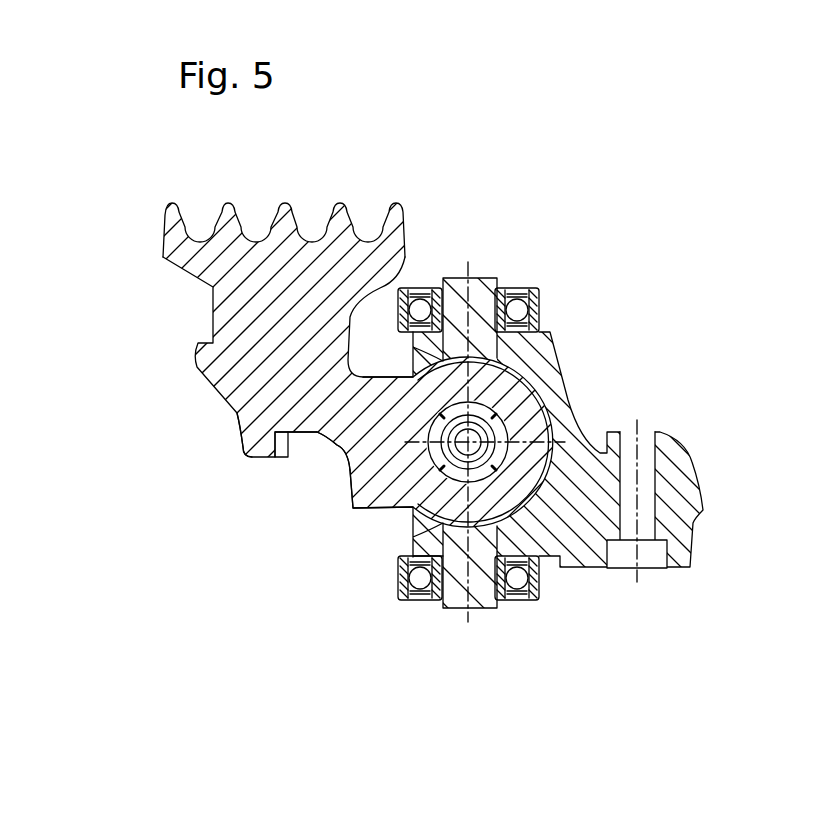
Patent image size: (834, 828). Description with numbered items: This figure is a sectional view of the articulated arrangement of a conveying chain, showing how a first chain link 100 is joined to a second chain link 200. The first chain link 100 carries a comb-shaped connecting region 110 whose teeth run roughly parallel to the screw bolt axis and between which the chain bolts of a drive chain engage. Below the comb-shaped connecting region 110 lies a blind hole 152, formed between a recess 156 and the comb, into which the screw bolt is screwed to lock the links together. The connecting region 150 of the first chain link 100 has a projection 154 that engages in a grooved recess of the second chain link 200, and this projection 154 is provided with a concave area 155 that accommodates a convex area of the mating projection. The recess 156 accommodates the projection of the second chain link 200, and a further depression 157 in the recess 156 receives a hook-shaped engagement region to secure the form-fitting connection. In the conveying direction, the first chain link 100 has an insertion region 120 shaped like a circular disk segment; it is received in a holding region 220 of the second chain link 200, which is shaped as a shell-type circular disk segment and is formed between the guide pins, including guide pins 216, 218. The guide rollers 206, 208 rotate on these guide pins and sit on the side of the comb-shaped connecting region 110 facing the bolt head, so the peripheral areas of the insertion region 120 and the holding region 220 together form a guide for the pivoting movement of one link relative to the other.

The first chain link 100 is at (183, 422).
The comb-shaped connecting region 110 is at (312, 185).
The insertion region 120 is at (381, 506).
The connecting region 150 is at (207, 360).
The blind hole 152 is at (317, 436).
The projection 154 is at (250, 448).
The concave area 155 is at (279, 458).
The recess 156 is at (316, 473).
The further depression 157 is at (352, 506).
The second chain link 200 is at (720, 478).
The guide roller 206 is at (533, 598).
The guide roller 208 is at (528, 290).
The guide pin 216 is at (452, 604).
The guide pin 218 is at (485, 279).
The holding region 220 is at (398, 508).